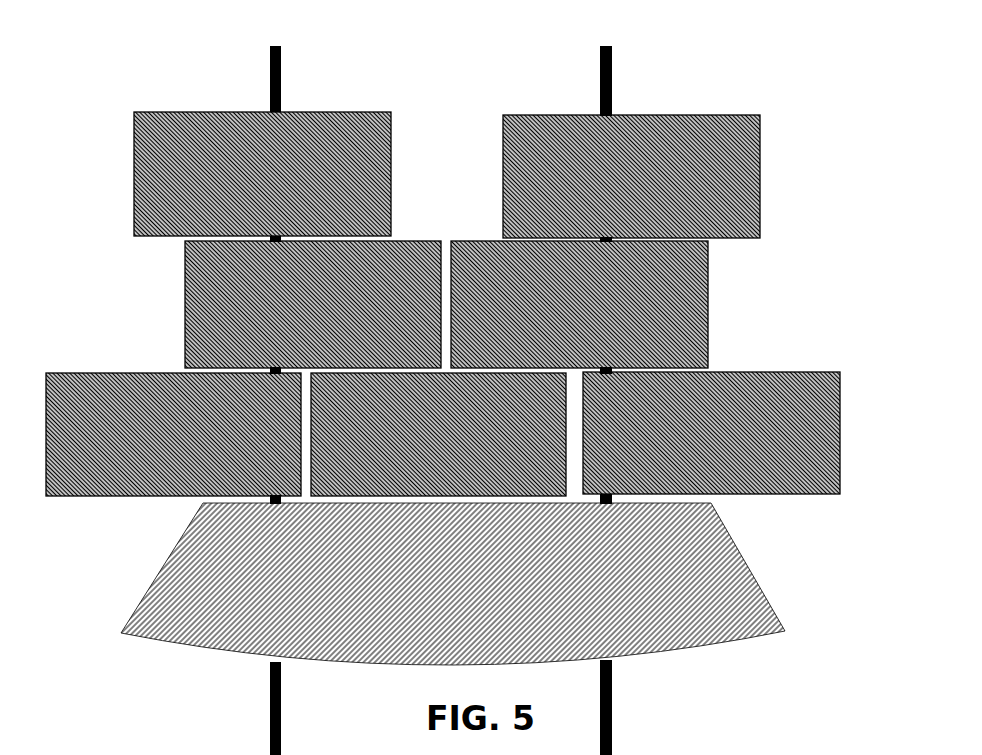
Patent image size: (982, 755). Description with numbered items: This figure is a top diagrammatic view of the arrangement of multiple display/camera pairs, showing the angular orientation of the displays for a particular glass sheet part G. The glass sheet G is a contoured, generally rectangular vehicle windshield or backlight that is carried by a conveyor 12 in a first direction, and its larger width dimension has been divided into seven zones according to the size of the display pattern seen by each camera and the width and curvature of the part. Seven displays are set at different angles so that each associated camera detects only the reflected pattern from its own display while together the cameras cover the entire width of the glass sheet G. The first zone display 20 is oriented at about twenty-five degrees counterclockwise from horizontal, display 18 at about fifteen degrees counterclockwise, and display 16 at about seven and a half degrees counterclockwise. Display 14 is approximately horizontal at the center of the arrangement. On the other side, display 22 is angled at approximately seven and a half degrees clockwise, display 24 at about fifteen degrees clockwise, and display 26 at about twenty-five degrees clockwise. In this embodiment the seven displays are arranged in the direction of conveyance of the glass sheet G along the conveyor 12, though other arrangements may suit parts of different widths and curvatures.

The conveyor 12 is at (603, 687).
The display 14 is at (420, 465).
The display 16 is at (680, 300).
The display 18 is at (725, 167).
The first zone display 20 is at (807, 410).
The display 22 is at (223, 317).
The display 24 is at (330, 123).
The display 26 is at (95, 390).
The glass sheet G is at (722, 608).